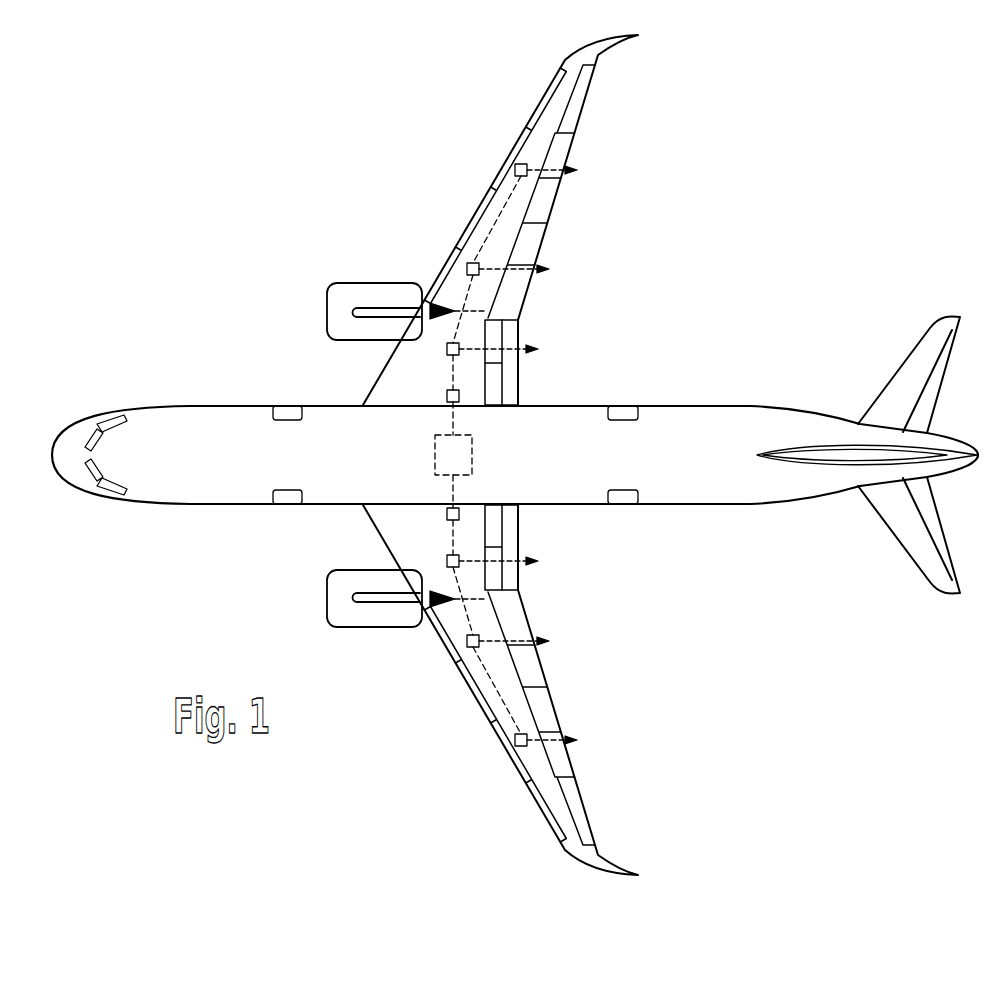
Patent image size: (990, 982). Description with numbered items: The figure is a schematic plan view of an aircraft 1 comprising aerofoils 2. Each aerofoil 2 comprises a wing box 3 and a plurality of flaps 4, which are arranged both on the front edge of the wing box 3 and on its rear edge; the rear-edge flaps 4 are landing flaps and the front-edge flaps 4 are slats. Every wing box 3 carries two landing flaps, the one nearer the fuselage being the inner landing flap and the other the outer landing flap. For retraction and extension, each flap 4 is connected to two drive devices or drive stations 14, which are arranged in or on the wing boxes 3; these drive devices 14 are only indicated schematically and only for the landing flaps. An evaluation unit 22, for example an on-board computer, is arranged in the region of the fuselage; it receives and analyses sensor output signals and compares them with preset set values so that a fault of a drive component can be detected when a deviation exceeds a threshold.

The aircraft 1 is at (515, 455).
The aerofoil 2 is at (410, 378).
The wing box 3 is at (501, 207).
The flap 4 is at (442, 275).
The drive device 14 is at (506, 165).
The evaluation unit 22 is at (458, 453).